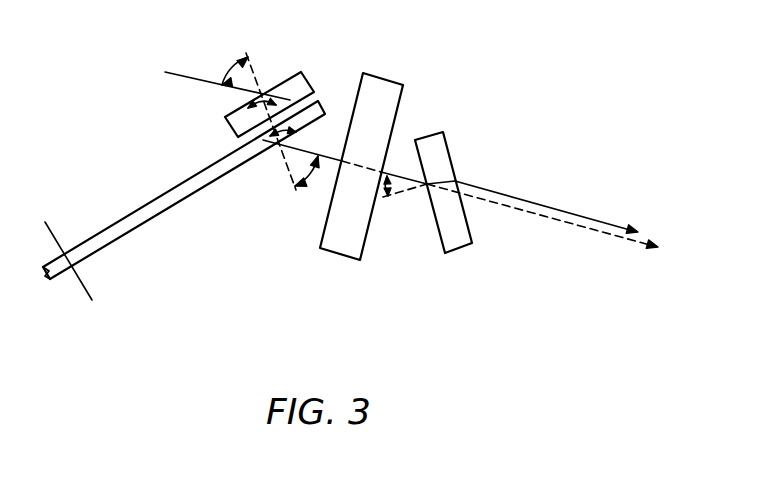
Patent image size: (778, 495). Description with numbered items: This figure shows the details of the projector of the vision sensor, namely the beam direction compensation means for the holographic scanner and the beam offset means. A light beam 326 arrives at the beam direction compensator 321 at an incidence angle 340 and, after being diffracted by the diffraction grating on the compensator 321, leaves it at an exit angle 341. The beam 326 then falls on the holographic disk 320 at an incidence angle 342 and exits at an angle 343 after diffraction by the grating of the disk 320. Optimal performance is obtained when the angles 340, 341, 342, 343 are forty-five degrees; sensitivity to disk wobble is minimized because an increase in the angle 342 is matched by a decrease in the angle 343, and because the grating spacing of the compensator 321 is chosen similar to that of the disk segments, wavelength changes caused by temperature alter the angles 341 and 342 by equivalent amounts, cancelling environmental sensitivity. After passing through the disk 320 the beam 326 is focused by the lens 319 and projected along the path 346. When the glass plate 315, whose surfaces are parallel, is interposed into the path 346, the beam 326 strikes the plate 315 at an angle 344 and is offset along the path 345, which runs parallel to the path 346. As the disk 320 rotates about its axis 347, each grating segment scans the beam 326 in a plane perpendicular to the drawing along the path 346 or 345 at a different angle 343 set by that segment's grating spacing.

The glass plate 315 is at (454, 173).
The lens 319 is at (322, 222).
The holographic disk 320 is at (140, 207).
The beam direction compensator 321 is at (288, 80).
The light beam 326 is at (215, 85).
The incidence angle on compensator 340 is at (225, 80).
The exit angle from compensator 341 is at (297, 136).
The incidence angle on disk 342 is at (247, 112).
The exit angle from disk 343 is at (293, 187).
The incidence angle on plate 344 is at (390, 191).
The offset beam path 345 is at (590, 218).
The projected beam path 346 is at (555, 220).
The disk rotation axis 347 is at (86, 288).